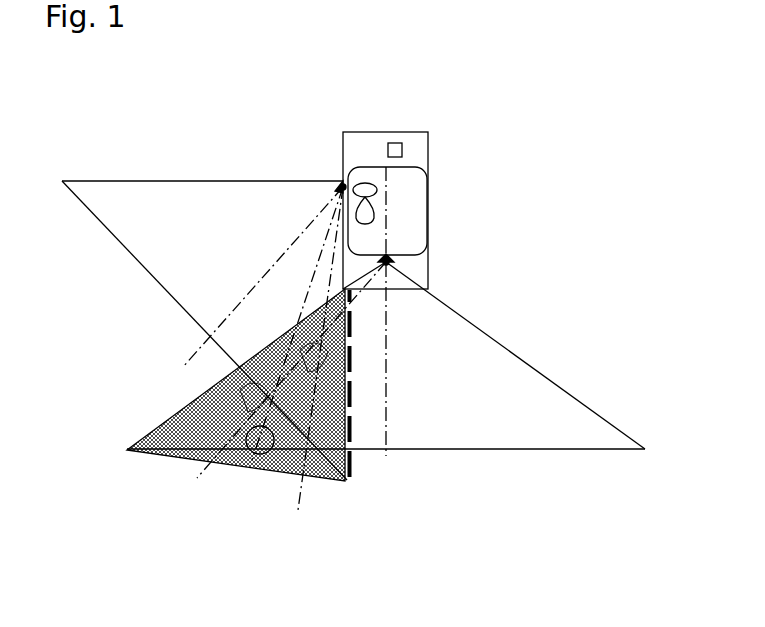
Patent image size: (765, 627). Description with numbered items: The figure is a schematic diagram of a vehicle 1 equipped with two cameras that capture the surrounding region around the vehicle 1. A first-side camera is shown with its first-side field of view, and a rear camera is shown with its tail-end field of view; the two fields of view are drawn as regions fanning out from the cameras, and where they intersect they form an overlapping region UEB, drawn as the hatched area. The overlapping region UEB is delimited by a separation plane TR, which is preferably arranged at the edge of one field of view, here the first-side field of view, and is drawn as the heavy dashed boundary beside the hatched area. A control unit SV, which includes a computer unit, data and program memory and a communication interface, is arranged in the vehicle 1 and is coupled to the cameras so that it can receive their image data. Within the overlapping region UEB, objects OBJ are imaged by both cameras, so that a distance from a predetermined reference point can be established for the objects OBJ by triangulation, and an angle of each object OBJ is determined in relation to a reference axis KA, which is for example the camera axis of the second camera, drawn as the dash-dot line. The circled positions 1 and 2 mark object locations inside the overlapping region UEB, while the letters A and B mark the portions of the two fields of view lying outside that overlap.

The vehicle 1 is at (314, 97).
The second object position 2 is at (323, 328).
The control unit SV is at (396, 143).
The reference axis KA is at (226, 318).
The separation plane TR is at (353, 473).
The overlapping region UEB is at (173, 456).
The objects OBJ is at (275, 467).
The region A is at (247, 238).
The region B is at (404, 373).